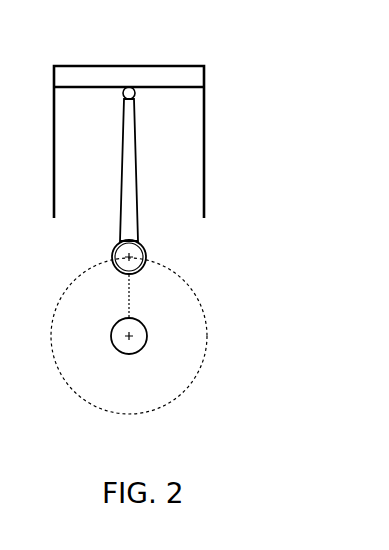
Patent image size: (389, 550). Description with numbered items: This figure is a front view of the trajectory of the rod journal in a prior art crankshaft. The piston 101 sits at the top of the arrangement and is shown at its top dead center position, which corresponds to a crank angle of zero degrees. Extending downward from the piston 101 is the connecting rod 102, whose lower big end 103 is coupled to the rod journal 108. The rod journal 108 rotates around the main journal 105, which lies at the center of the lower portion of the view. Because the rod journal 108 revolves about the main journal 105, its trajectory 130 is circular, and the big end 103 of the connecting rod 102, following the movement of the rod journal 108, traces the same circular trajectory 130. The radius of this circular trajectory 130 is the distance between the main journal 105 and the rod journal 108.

The piston 101 is at (160, 116).
The connecting rod 102 is at (231, 151).
The big end 103 is at (77, 253).
The rod journal 108 is at (236, 195).
The main journal 105 is at (234, 278).
The trajectory 130 is at (200, 336).